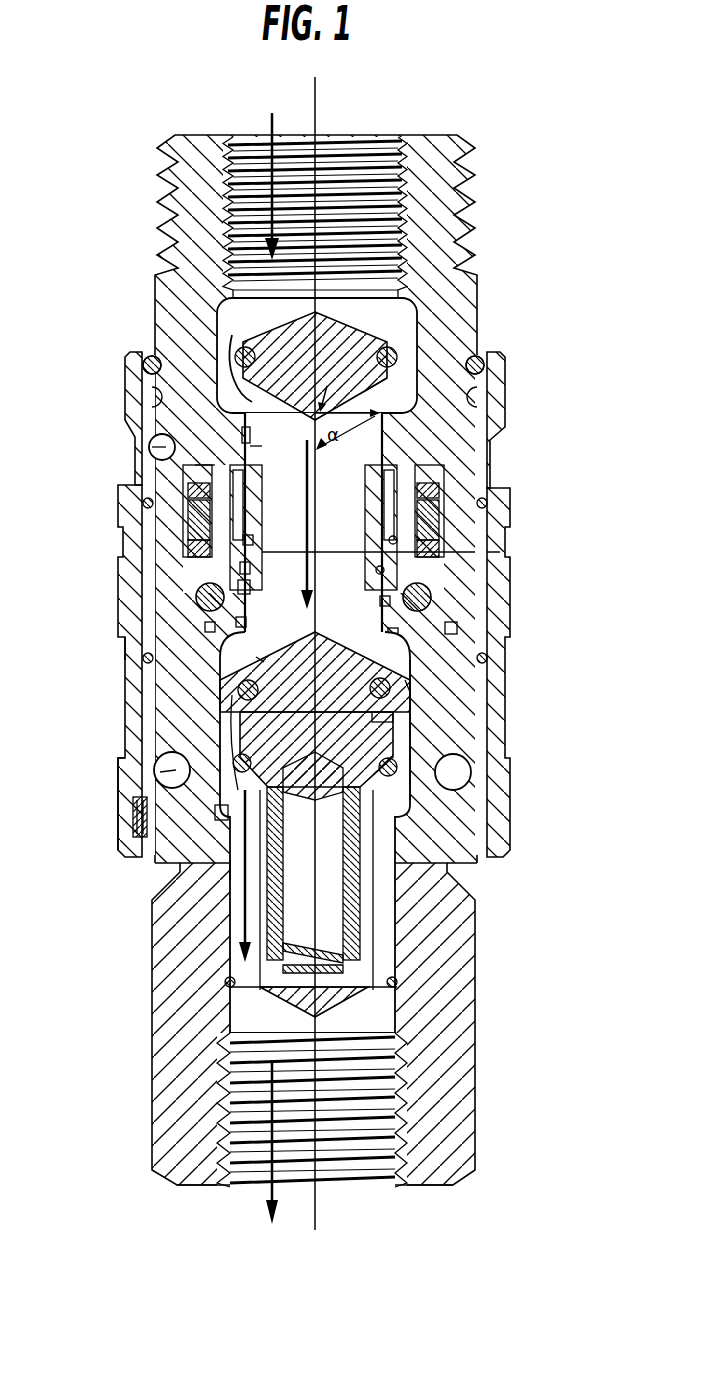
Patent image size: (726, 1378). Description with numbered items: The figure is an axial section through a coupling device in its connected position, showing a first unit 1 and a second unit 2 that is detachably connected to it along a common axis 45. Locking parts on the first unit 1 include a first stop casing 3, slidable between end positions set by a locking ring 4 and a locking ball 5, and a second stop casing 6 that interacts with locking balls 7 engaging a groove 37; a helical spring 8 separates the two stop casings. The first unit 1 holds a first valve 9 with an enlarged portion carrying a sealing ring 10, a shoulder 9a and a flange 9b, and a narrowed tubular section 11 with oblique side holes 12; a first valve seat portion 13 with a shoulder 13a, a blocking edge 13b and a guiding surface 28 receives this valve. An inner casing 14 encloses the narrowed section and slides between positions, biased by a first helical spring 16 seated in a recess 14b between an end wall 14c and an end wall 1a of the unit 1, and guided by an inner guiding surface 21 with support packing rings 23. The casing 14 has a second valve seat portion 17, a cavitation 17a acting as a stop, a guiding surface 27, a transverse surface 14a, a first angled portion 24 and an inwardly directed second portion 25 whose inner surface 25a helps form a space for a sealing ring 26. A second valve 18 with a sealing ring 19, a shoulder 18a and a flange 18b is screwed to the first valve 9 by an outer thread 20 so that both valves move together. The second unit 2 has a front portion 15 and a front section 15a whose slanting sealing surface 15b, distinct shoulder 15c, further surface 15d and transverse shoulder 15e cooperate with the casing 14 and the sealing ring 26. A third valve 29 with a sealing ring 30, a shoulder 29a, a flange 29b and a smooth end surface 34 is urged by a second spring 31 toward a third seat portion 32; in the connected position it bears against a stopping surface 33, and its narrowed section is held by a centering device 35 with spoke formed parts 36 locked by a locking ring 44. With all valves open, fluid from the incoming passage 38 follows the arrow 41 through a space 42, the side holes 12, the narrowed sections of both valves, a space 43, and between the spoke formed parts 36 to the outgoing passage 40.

The first unit 1 is at (527, 226).
The end wall 1a is at (207, 462).
The second unit 2 is at (508, 1050).
The first stop casing 3 is at (484, 363).
The locking ring 4 is at (143, 366).
The locking ball 5 is at (150, 448).
The second stop casing 6 is at (504, 712).
The locking balls 7 is at (155, 770).
The helical spring 8 is at (498, 674).
The first valve 9 is at (352, 350).
The shoulder 9a is at (238, 388).
The flange 9b is at (245, 346).
The sealing ring 10 is at (388, 346).
The narrowed section 11 is at (386, 381).
The side holes 12 is at (400, 418).
The first valve seat portion 13 is at (252, 421).
The shoulder 13a is at (262, 446).
The blocking edge 13b is at (263, 472).
The inner casing 14 is at (141, 489).
The transverse surface 14a is at (424, 672).
The inner recess 14b is at (378, 468).
The end wall 14c is at (262, 541).
The front section 15 is at (246, 622).
The front section (nipple) 15a is at (152, 727).
The slanting sealing surface 15b is at (380, 601).
The distinct shoulder 15c is at (388, 633).
The further surface 15d is at (456, 629).
The transverse shoulder 15e is at (488, 658).
The first helical spring 16 is at (383, 550).
The second valve seat portion 17 is at (250, 590).
The cavitation 17a is at (250, 570).
The second valve 18 is at (271, 679).
The shoulder 18a is at (238, 680).
The foldable flange 18b is at (234, 706).
The sealing ring 19 is at (369, 690).
The outer thread 20 is at (383, 472).
The inner guiding surface 21 is at (188, 538).
The support packing rings 23 is at (440, 546).
The first angled portion 24 is at (196, 598).
The second angled portion 25 is at (147, 648).
The inner surface 25a is at (205, 627).
The sealing ring 26 is at (432, 598).
The guiding surface 27 is at (375, 572).
The guiding surface 28 is at (313, 539).
The third valve 29 is at (387, 777).
The shoulder 29a is at (248, 753).
The flange 29b is at (252, 766).
The sealing ring 30 is at (326, 856).
The second spring 31 is at (345, 893).
The third seat portion 32 is at (265, 648).
The stopping surface 33 is at (224, 814).
The smooth end surface 34 is at (374, 726).
The centering device 35 is at (262, 900).
The spoke formed parts 36 is at (236, 873).
The groove 37 is at (133, 822).
The incoming passage 38 is at (372, 158).
The outgoing passage 40 is at (256, 1012).
The arrow 41 is at (240, 966).
The space 42 is at (216, 316).
The space 43 is at (411, 710).
The locking ring 44 is at (390, 988).
The common axis 45 is at (316, 119).